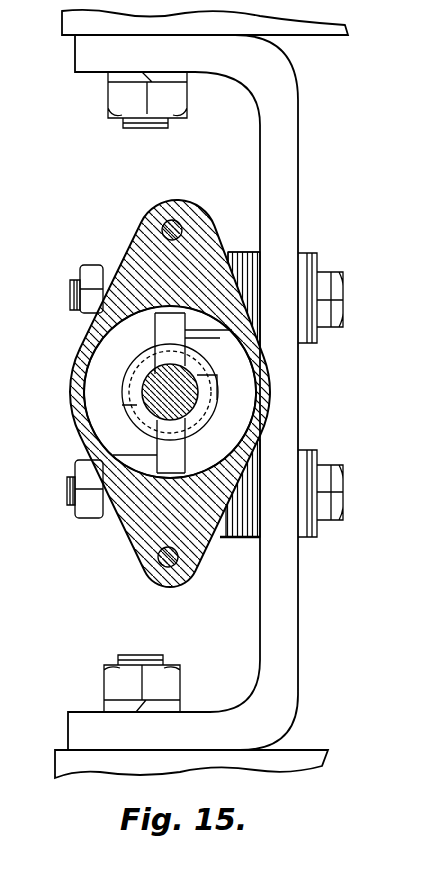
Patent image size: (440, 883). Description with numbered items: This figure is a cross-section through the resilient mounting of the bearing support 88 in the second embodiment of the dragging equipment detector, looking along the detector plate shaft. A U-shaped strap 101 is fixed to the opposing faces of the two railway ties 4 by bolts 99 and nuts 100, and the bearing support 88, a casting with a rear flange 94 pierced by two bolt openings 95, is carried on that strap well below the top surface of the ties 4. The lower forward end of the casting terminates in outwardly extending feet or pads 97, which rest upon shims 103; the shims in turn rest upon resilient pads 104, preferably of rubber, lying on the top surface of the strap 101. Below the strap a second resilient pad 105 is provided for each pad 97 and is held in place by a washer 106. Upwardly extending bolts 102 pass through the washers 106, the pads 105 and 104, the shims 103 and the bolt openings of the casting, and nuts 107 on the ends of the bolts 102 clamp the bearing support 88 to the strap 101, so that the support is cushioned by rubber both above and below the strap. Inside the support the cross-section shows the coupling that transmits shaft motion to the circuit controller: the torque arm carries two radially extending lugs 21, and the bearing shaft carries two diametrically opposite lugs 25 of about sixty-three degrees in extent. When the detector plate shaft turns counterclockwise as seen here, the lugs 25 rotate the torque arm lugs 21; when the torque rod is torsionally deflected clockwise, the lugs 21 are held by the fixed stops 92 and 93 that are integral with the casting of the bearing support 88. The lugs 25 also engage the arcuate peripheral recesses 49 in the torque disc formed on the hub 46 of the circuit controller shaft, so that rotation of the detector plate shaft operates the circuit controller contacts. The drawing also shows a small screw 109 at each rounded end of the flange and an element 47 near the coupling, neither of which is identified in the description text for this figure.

The railway ties 4 is at (62, 23).
The torque arm lugs 21 is at (162, 334).
The bearing shaft lugs 25 is at (135, 405).
The hub 46 is at (200, 414).
The sleeve 47 is at (133, 372).
The peripheral recesses 49 is at (130, 392).
The bearing support 88 is at (100, 200).
The fixed stop 92 is at (195, 370).
The fixed stop 93 is at (160, 448).
The flange 94 is at (142, 206).
The bolt openings 95 is at (197, 210).
The pads 97 is at (226, 250).
The bolts 99 is at (150, 130).
The nuts 100 is at (180, 100).
The U-shaped strap 101 is at (298, 128).
The bolts 102 is at (325, 328).
The shims 103 is at (241, 540).
The resilient pads 104 is at (253, 250).
The second resilient pad 105 is at (304, 256).
The washer 106 is at (323, 272).
The nuts 107 is at (92, 266).
The screw 109 is at (173, 220).
The element rubber is at (253, 312).